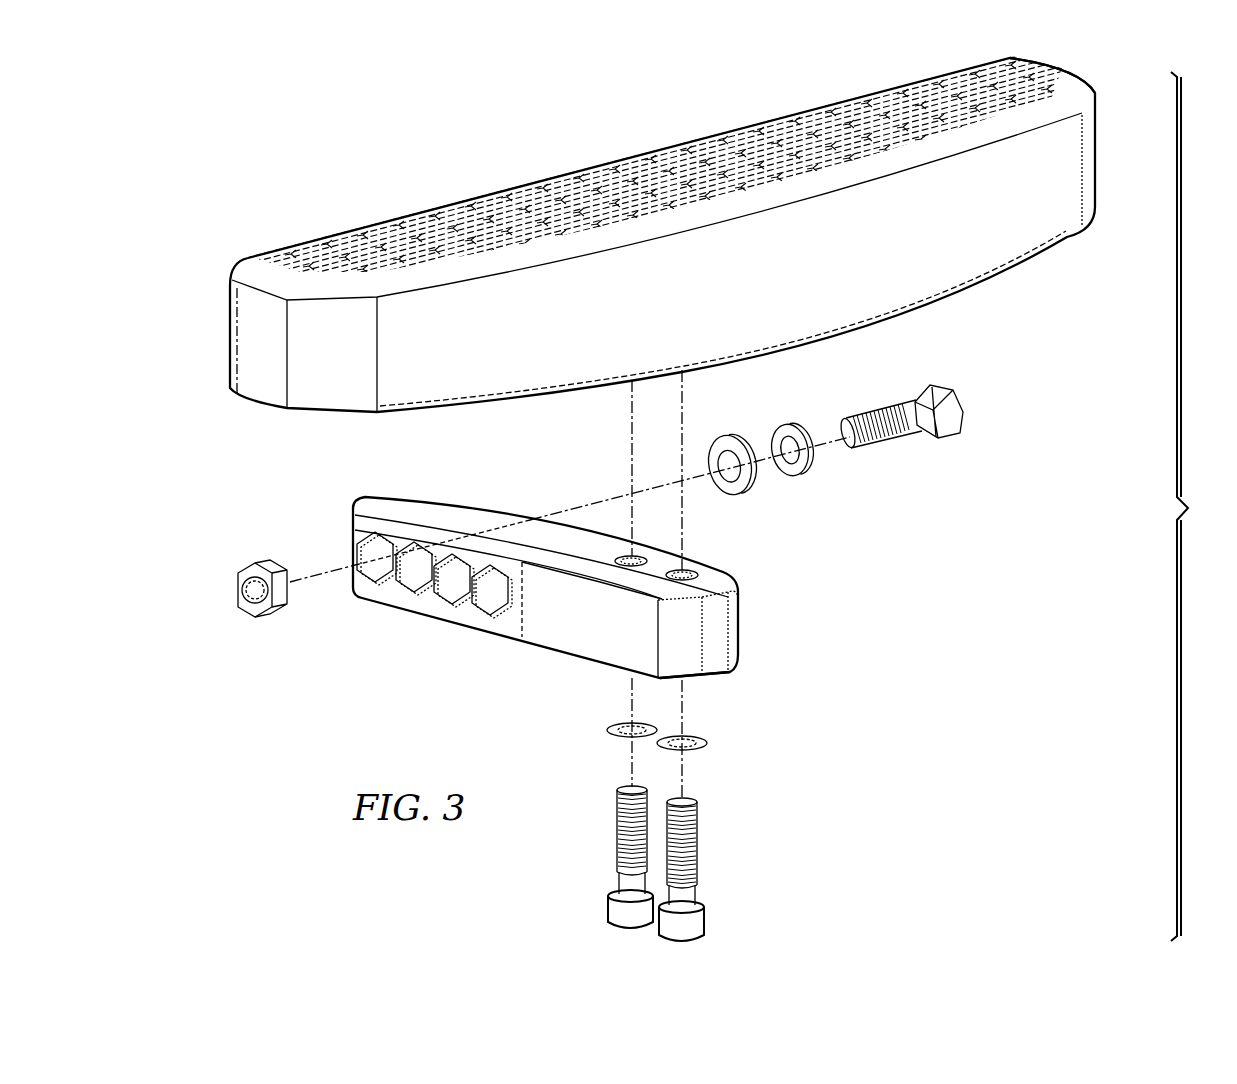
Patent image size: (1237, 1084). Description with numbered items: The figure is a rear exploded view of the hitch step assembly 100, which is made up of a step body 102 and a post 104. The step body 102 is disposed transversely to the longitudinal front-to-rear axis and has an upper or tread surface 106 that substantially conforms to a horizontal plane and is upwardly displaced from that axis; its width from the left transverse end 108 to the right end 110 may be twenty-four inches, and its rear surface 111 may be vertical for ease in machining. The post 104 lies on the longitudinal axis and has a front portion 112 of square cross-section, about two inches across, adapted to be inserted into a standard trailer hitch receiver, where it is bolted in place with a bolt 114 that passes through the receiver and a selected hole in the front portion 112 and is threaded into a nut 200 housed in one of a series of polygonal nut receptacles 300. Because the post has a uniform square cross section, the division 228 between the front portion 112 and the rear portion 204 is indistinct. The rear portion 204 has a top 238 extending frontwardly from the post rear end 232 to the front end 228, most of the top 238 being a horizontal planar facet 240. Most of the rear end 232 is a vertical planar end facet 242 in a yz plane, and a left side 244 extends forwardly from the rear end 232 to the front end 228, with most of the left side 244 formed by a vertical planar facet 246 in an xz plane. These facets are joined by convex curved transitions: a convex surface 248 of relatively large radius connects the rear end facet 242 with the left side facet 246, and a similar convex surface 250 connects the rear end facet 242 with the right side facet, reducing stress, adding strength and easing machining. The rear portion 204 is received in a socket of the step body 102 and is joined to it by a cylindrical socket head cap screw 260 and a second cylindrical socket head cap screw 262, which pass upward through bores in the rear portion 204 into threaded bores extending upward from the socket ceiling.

The hitch step assembly 100 is at (1200, 506).
The step body 102 is at (446, 188).
The post 104 is at (340, 517).
The upper or tread surface 106 is at (633, 178).
The left transverse end 108 is at (258, 346).
The right end 110 is at (1097, 156).
The rear surface 111 is at (905, 260).
The front portion 112 is at (412, 502).
The bolt 114 is at (955, 400).
The nut 200 is at (241, 603).
The rear portion 204 is at (703, 679).
The division 228 is at (556, 540).
The rear end 232 is at (722, 653).
The top 238 is at (704, 573).
The horizontal planar facet 240 is at (663, 562).
The vertical planar end facet 242 is at (722, 628).
The left side 244 is at (581, 636).
The vertical planar facet 246 is at (600, 641).
The convex surface 248 is at (677, 628).
The convex surface 250 is at (737, 610).
The cylindrical socket head cap screw 260 is at (616, 841).
The cylindrical socket head cap screw 262 is at (698, 851).
The polygonal nut receptacles 300 is at (486, 607).